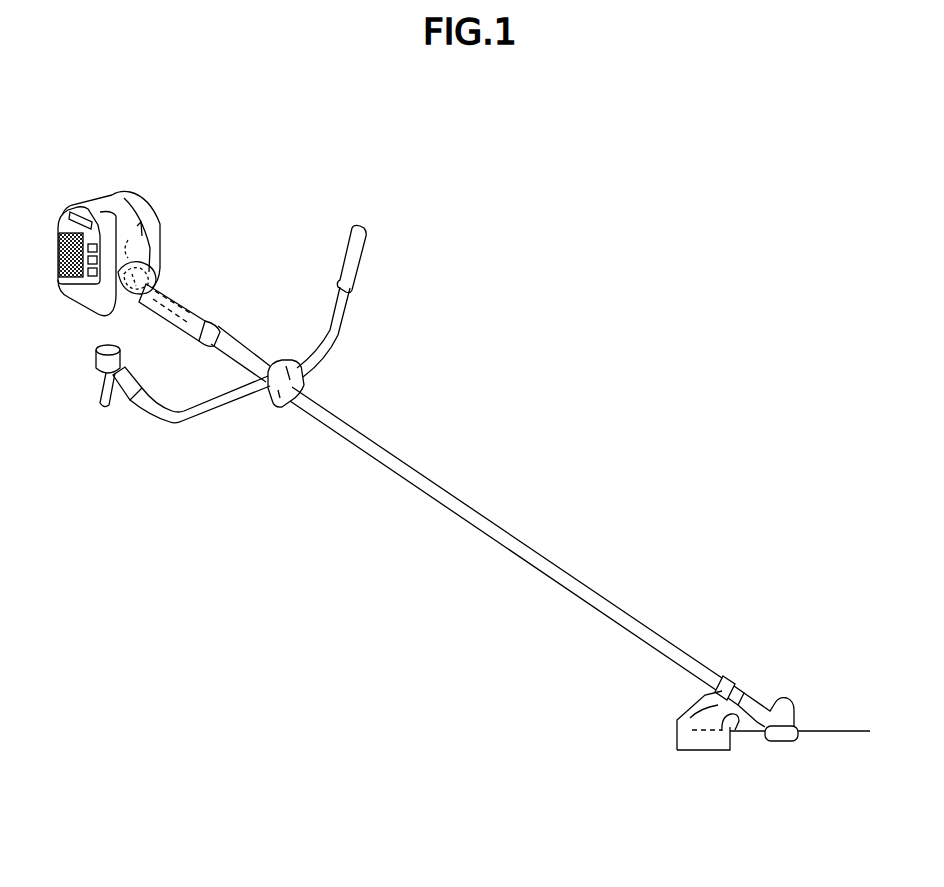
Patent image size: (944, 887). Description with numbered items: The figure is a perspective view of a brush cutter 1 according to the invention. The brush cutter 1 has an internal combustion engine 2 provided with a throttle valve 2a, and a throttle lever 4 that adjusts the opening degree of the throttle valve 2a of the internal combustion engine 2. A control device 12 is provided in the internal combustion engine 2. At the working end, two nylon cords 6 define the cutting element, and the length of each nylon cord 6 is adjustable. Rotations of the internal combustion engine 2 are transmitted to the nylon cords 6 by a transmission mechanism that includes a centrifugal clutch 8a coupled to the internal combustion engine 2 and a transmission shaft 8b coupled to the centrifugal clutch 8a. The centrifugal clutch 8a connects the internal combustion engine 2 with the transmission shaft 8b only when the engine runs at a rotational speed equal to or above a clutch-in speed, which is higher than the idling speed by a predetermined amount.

The brush cutter 1 is at (538, 397).
The internal combustion engine 2 is at (100, 200).
The throttle valve 2a is at (130, 207).
The control device 12 is at (148, 236).
The centrifugal clutch 8a is at (152, 268).
The transmission shaft 8b is at (183, 300).
The throttle lever 4 is at (102, 405).
The nylon cords 6 is at (835, 733).